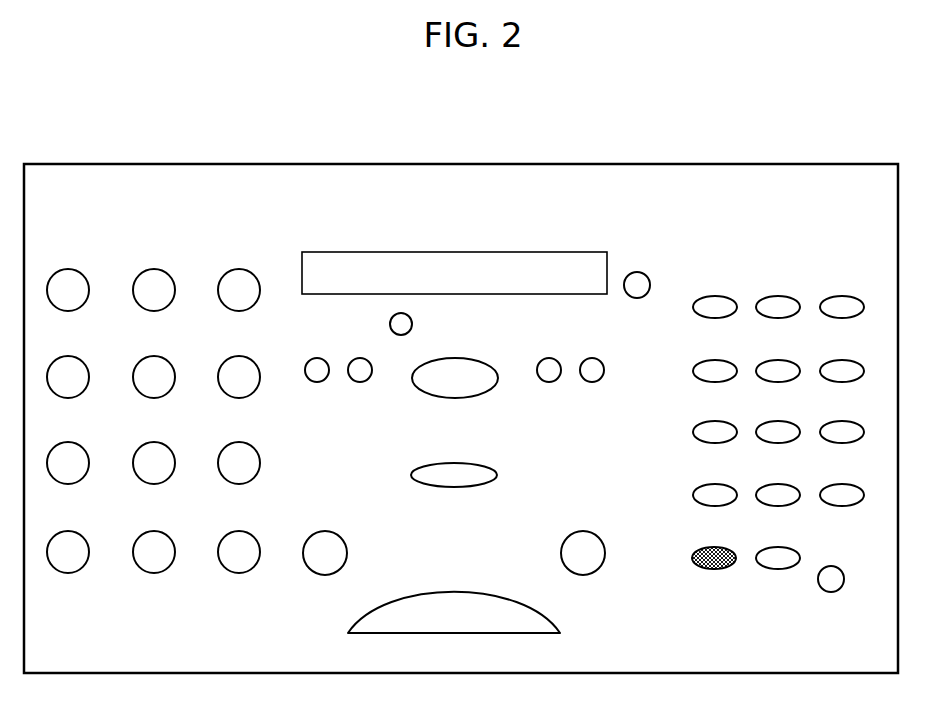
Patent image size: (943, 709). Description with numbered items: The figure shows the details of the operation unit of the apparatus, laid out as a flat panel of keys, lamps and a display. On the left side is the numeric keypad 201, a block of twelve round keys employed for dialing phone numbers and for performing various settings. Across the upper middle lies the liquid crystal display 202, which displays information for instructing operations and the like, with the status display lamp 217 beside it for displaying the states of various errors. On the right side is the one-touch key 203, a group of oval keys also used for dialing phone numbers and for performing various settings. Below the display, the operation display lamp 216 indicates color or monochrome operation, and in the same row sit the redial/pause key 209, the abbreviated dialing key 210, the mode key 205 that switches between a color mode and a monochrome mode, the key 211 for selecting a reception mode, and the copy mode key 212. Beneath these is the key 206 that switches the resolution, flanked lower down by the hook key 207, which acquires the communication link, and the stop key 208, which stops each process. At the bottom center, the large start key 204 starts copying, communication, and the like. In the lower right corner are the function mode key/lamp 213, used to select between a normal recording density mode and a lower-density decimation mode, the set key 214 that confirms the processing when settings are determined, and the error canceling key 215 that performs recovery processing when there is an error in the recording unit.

The numeric keypad 201 is at (153, 402).
The liquid crystal display 202 is at (444, 250).
The one-touch key 203 is at (778, 380).
The start key 204 is at (454, 600).
The mode key 205 is at (455, 366).
The key 206 is at (454, 464).
The hook key 207 is at (325, 540).
The stop key 208 is at (583, 540).
The redial/pause key 209 is at (317, 358).
The abbreviated dialing key 210 is at (360, 358).
The key for selecting a reception mode 211 is at (549, 358).
The copy mode key 212 is at (592, 358).
The function mode key/lamp 213 is at (714, 547).
The set key 214 is at (778, 547).
The error canceling key 215 is at (831, 567).
The operation display lamp 216 is at (419, 324).
The status display lamp 217 is at (637, 274).